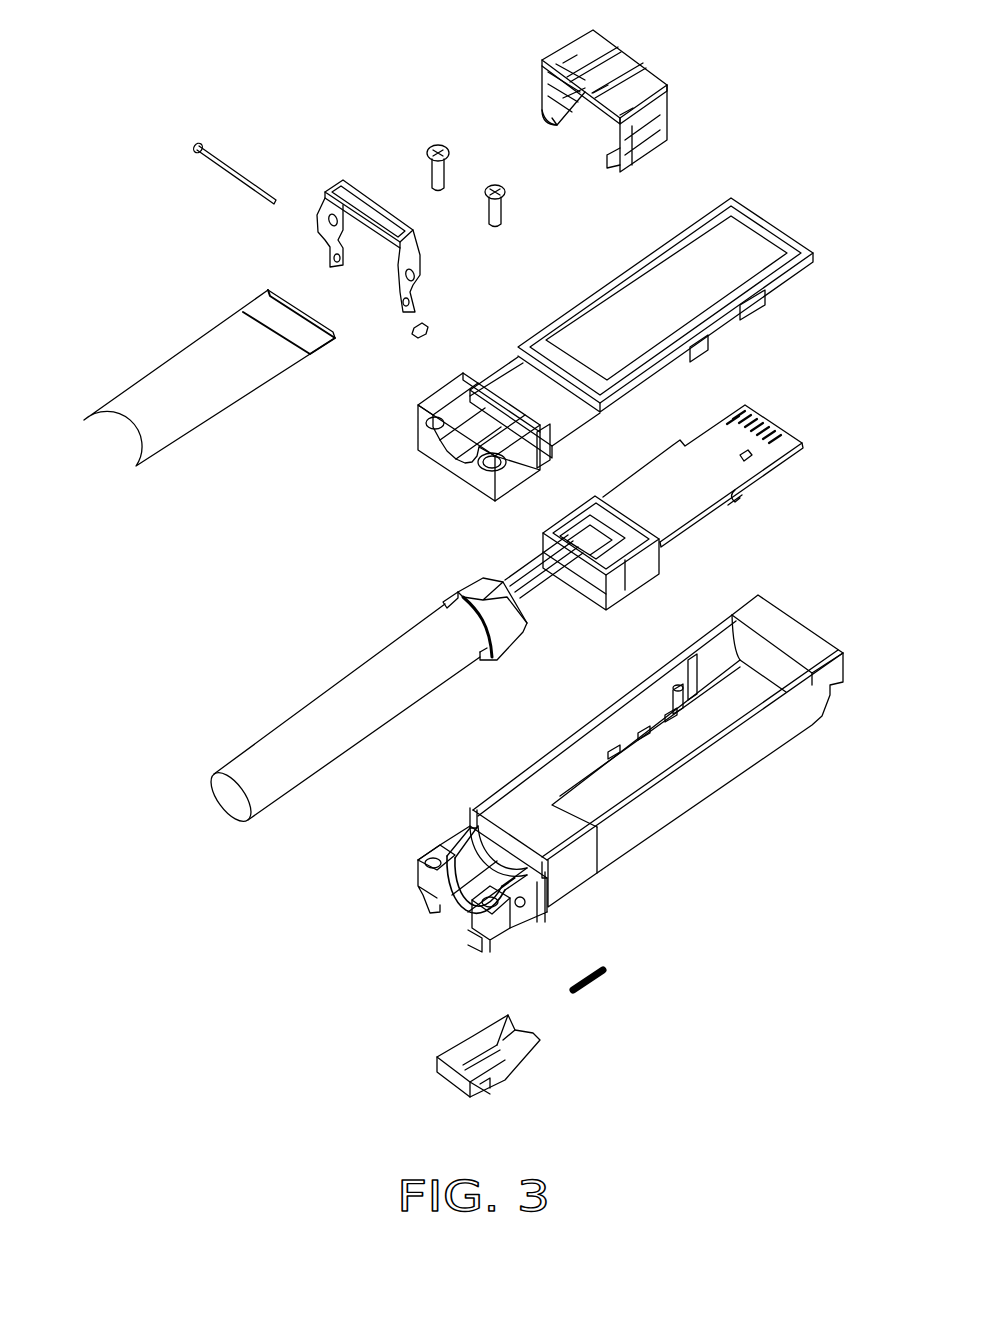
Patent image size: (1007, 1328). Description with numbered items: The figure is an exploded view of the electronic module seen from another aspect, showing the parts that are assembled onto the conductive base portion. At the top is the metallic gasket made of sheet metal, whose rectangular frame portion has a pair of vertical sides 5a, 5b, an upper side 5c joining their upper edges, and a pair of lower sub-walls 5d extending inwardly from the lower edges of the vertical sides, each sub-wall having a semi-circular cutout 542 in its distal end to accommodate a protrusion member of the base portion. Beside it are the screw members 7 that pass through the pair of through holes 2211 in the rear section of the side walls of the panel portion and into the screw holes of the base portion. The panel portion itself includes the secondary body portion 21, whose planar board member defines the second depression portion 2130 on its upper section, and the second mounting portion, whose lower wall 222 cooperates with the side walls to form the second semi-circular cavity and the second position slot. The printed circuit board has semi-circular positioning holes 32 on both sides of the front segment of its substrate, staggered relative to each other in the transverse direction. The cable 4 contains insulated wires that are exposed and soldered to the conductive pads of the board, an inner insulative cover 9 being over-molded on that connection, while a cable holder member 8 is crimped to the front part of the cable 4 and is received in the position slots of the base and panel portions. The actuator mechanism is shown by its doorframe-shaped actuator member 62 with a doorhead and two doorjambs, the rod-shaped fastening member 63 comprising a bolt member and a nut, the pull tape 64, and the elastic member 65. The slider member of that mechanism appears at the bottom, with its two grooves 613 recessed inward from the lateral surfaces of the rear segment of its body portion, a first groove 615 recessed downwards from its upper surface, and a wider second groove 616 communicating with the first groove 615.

The cable 4 is at (372, 688).
The vertical side 5a is at (545, 88).
The vertical side 5b is at (642, 148).
The upper side 5c is at (545, 58).
The lower sub-wall 5d is at (545, 108).
The semi-circular cutout 542 is at (550, 115).
The screw member 7 is at (415, 131).
The cable holder member 8 is at (478, 594).
The inner insulative cover 9 is at (620, 543).
The secondary body portion 21 is at (657, 290).
The second depression portion 2130 is at (532, 383).
The lower wall 222 is at (473, 407).
The through hole 2211 is at (433, 415).
The semi-circular positioning hole 32 is at (733, 500).
The actuator member 62 is at (323, 173).
The fastening member 63 is at (235, 182).
The pull tape 64 is at (168, 343).
The elastic member 65 is at (593, 987).
The groove 613 is at (478, 1092).
The first groove 615 is at (478, 1057).
The second groove 616 is at (503, 1033).